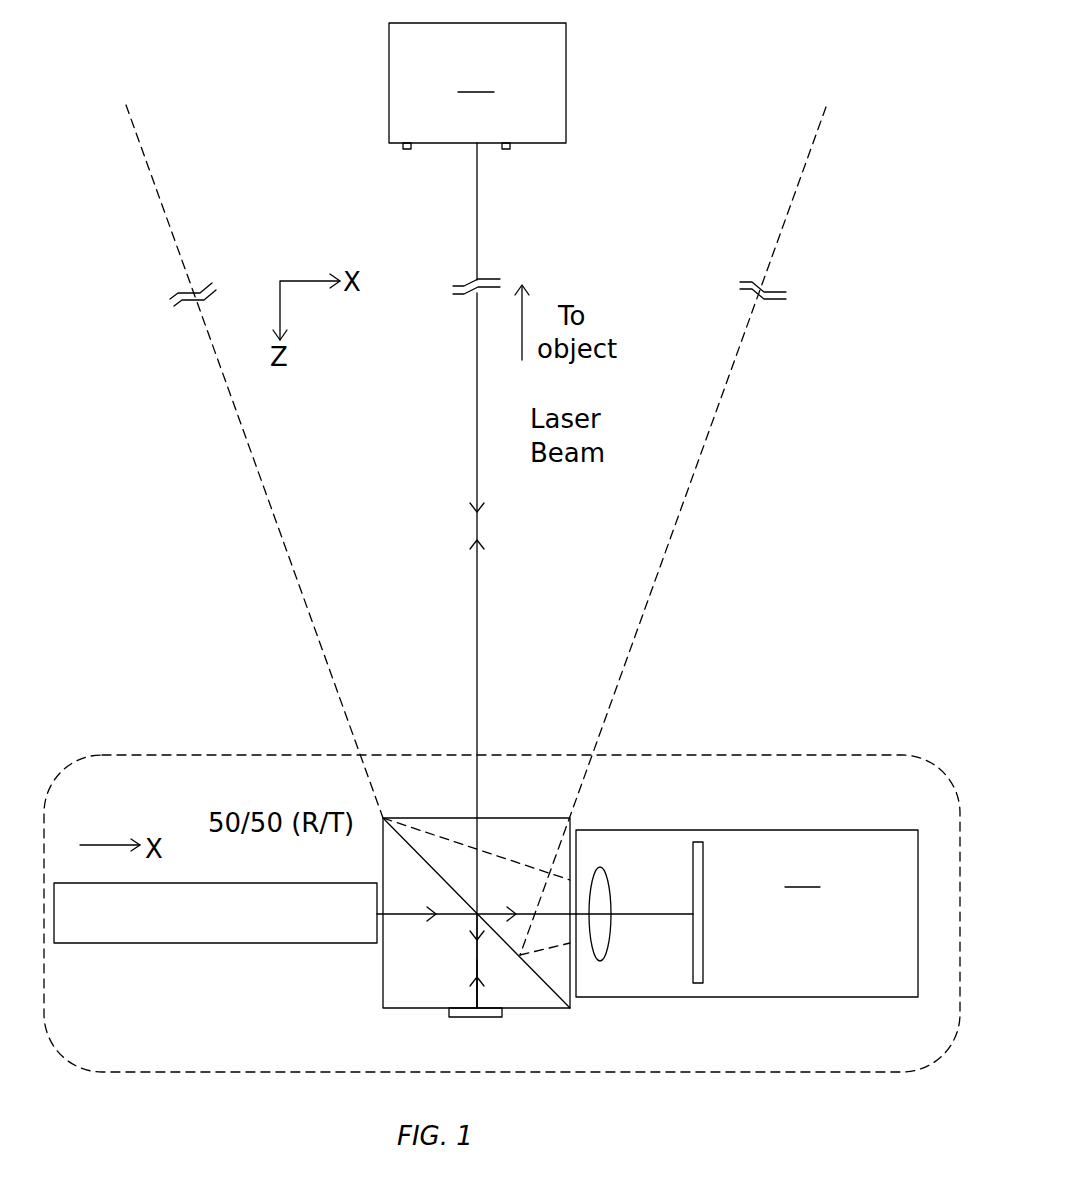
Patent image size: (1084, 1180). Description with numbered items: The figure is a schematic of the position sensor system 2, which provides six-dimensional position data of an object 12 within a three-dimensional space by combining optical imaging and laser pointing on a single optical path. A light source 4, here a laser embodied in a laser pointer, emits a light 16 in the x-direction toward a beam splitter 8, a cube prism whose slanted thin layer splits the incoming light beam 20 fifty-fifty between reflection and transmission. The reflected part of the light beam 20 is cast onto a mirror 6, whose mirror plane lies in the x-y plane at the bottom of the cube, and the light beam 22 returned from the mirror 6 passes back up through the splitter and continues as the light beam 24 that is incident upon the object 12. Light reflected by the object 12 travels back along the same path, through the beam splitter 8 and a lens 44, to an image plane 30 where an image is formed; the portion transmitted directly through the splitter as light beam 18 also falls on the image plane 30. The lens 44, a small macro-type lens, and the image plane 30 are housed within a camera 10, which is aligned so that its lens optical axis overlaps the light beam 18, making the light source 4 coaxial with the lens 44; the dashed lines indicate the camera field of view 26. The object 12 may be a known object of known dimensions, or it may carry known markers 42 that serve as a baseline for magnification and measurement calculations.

The system 2 is at (760, 720).
The light source 4 is at (190, 944).
The mirror 6 is at (448, 1013).
The beam splitter 8 is at (400, 1010).
The camera 10 is at (747, 934).
The object 12 is at (529, 83).
The light 16 is at (410, 916).
The light beam 18 is at (495, 910).
The light beam 20 is at (473, 922).
The beam returned from mirror 22 is at (477, 994).
The light beam 24 is at (477, 436).
The camera field of view 26 is at (676, 526).
The image plane 30 is at (693, 883).
The markers 42 is at (406, 150).
The lens 44 is at (598, 870).